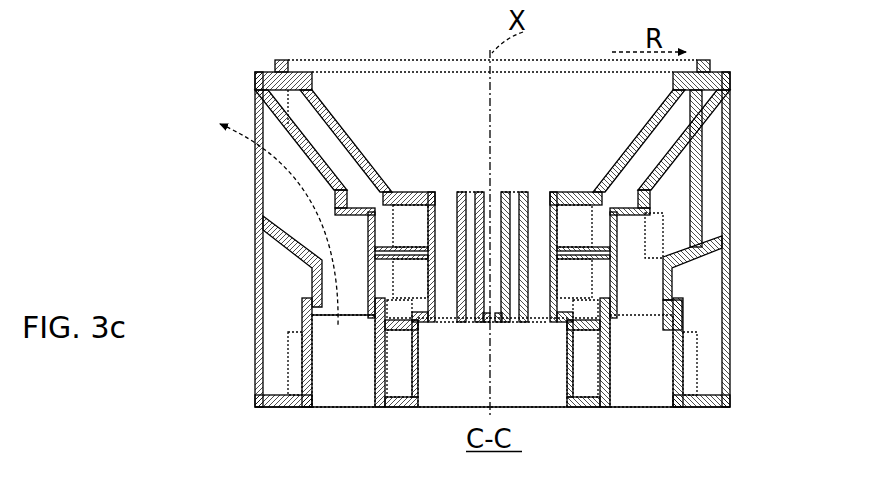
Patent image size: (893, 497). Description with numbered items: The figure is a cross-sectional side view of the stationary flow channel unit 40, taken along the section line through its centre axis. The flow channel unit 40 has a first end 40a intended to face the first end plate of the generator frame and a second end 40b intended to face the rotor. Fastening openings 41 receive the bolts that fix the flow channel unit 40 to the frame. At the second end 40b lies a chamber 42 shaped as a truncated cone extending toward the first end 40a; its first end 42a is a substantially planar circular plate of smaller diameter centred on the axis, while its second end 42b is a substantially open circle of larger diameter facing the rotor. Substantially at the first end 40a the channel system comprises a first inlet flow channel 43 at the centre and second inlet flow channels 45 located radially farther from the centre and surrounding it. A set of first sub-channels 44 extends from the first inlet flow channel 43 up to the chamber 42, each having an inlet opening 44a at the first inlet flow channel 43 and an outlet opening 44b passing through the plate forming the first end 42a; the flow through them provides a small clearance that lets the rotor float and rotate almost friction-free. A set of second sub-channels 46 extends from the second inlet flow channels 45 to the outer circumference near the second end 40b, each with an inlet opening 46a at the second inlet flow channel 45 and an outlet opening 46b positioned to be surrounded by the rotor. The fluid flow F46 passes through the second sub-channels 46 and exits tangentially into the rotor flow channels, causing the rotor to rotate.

The flow channel unit 40 is at (741, 170).
The first end of the flow channel unit 40a is at (693, 412).
The second end of the flow channel unit 40b is at (560, 52).
The fastening openings 41 is at (276, 373).
The chamber 42 is at (636, 118).
The first end of the chamber 42a is at (423, 182).
The second end of the chamber 42b is at (340, 54).
The first inlet flow channel 43 is at (532, 393).
The first sub-channels 44 is at (486, 325).
The inlet opening of the first sub-channel 44a is at (498, 330).
The outlet opening of the first sub-channel 44b is at (482, 184).
The second inlet flow channels 45 is at (330, 393).
The second sub-channels 46 is at (296, 212).
The inlet opening of the second sub-channel 46a is at (353, 335).
The outlet opening of the second sub-channel 46b is at (243, 209).
The fluid flow F46 is at (232, 145).